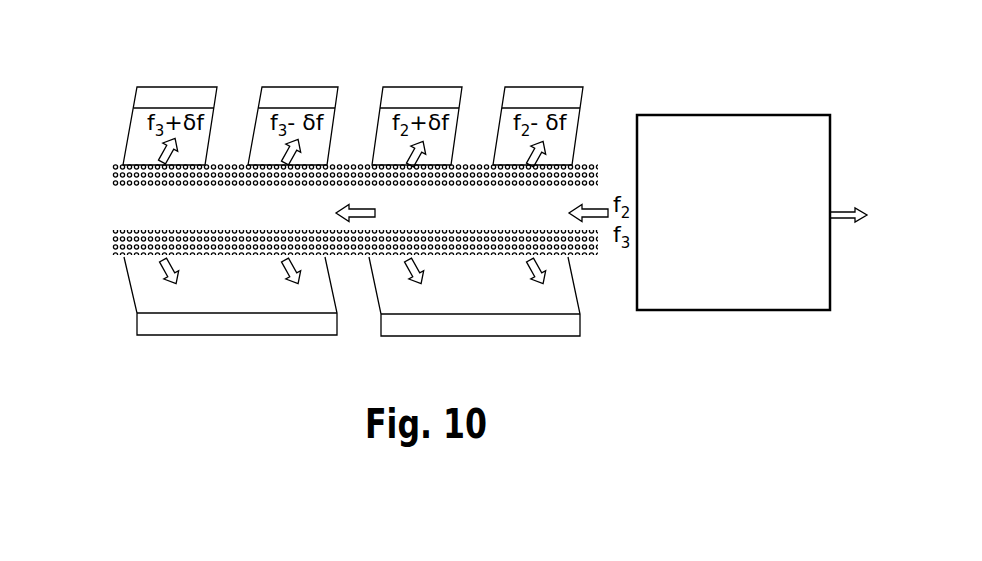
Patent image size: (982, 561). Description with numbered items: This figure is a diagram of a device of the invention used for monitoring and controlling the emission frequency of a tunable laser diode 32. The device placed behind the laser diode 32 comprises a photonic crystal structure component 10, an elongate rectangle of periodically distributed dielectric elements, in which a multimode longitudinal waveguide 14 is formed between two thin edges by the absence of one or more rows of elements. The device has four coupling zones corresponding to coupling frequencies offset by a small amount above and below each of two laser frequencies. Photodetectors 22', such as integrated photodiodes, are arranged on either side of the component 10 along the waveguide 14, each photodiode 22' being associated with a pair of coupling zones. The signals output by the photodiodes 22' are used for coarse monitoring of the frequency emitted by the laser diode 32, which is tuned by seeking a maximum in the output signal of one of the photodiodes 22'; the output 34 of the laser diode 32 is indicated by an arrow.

The photonic crystal structure component 10 is at (96, 249).
The multimode longitudinal waveguide 14 is at (128, 212).
The photodetectors 22' is at (352, 324).
The tunable laser diode 32 is at (733, 212).
The output signal 34 is at (840, 207).